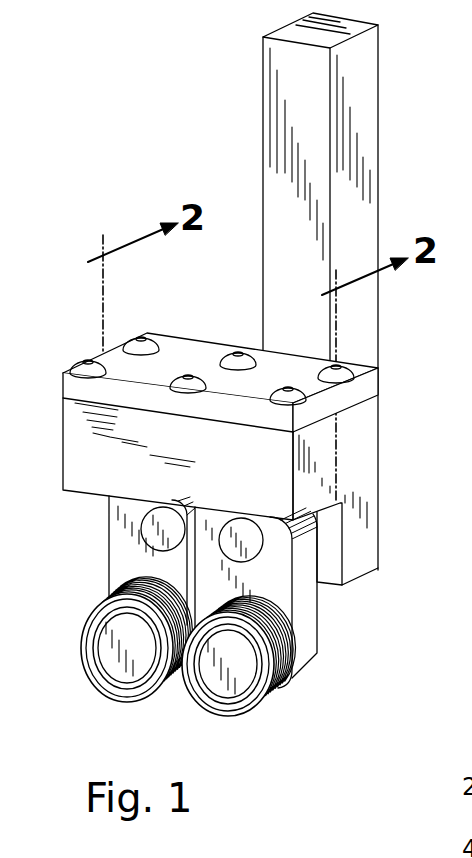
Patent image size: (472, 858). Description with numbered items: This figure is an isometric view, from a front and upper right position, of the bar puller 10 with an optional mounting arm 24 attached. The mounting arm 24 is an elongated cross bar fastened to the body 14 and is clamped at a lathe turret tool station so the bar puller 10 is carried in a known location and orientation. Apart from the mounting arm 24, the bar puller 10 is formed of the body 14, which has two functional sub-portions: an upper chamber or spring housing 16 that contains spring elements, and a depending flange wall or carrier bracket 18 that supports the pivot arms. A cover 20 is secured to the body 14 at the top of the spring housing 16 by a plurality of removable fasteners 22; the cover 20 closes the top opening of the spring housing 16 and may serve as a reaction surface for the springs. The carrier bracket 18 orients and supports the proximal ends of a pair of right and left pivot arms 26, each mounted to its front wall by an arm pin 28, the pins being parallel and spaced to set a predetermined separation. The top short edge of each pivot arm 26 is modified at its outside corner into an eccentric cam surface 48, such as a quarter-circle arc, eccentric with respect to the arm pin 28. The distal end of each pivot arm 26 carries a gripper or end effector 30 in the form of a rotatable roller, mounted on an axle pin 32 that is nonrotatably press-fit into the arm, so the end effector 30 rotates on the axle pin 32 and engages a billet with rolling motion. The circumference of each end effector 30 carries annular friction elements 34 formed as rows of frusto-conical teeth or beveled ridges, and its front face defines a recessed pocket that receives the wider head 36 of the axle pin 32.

The bar puller 10 is at (60, 255).
The body 14 is at (363, 435).
The spring housing 16 is at (78, 423).
The carrier bracket 18 is at (357, 570).
The cover 20 is at (181, 350).
The removable fasteners 22 is at (82, 358).
The mounting arm 24 is at (376, 177).
The pivot arms 26 is at (122, 560).
The arm pin 28 is at (163, 512).
The end effector 30 is at (107, 649).
The axle pin 32 is at (217, 672).
The friction elements 34 is at (264, 673).
The head 36 is at (105, 670).
The eccentric cam surface 48 is at (106, 501).